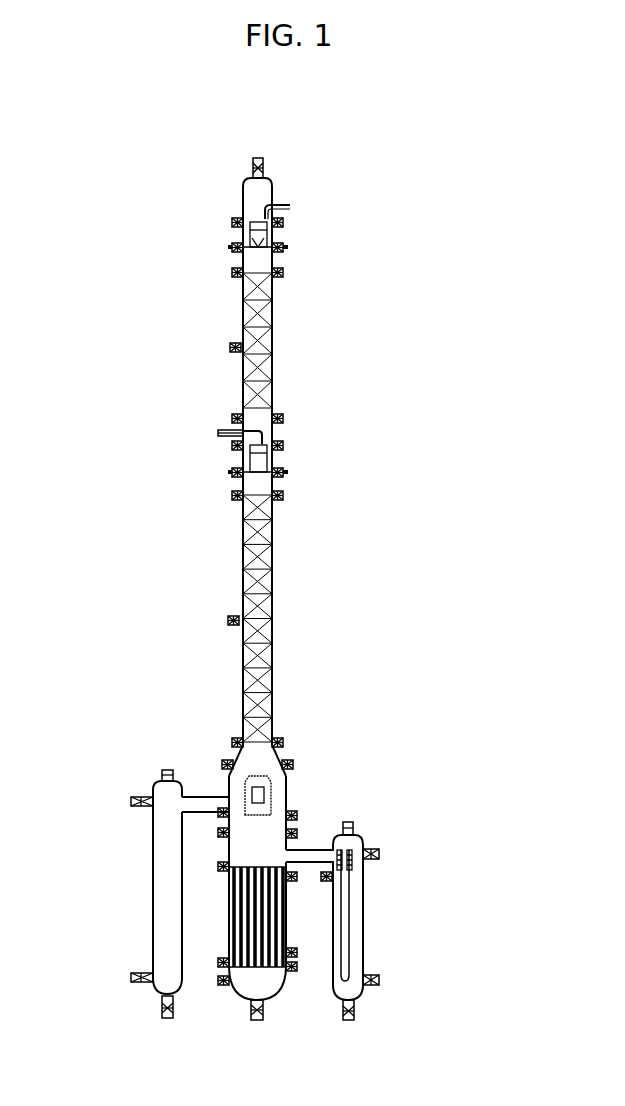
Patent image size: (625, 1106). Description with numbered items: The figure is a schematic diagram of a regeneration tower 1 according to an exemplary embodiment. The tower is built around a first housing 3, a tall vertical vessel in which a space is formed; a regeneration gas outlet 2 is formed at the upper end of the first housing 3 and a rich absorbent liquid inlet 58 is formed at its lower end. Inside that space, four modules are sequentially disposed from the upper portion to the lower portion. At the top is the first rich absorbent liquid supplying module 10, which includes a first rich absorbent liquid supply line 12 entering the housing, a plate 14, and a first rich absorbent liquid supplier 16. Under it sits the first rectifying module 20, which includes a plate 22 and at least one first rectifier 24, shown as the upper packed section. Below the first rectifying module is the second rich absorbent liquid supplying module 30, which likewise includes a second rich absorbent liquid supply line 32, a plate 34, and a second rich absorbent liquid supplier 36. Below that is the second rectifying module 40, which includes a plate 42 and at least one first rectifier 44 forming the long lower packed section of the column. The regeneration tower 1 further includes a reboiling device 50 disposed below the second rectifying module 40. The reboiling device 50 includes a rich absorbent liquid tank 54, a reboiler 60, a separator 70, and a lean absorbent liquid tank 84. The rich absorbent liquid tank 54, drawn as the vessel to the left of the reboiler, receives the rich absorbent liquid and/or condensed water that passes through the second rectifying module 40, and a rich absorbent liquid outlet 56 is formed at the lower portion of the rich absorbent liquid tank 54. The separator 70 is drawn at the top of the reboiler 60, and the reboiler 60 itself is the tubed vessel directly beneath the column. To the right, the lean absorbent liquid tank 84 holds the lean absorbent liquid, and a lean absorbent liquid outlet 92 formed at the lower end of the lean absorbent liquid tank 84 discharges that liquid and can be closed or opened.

The regeneration tower 1 is at (410, 262).
The regeneration gas outlet 2 is at (258, 158).
The first housing 3 is at (274, 654).
The first rich absorbent liquid supplying module 10 is at (320, 204).
The first rich absorbent liquid supply line 12 is at (287, 204).
The plate 14 is at (250, 213).
The first rich absorbent liquid supplier 16 is at (240, 234).
The first rectifying module 20 is at (287, 344).
The plate 22 is at (284, 420).
The first rectifier 24 is at (243, 410).
The second rich absorbent liquid supplying module 30 is at (190, 452).
The second rich absorbent liquid supply line 32 is at (226, 430).
The plate 34 is at (284, 444).
The second rich absorbent liquid supplier 36 is at (246, 460).
The second rectifying module 40 is at (292, 597).
The plate 42 is at (266, 752).
The first rectifier 44 is at (274, 556).
The reboiling device 50 is at (197, 746).
The rich absorbent liquid tank 54 is at (145, 888).
The rich absorbent liquid outlet 56 is at (167, 1020).
The rich absorbent liquid inlet 58 is at (258, 1022).
The reboiler 60 is at (293, 915).
The separator 70 is at (276, 795).
The lean absorbent liquid tank 84 is at (370, 930).
The lean absorbent liquid outlet 92 is at (348, 1020).